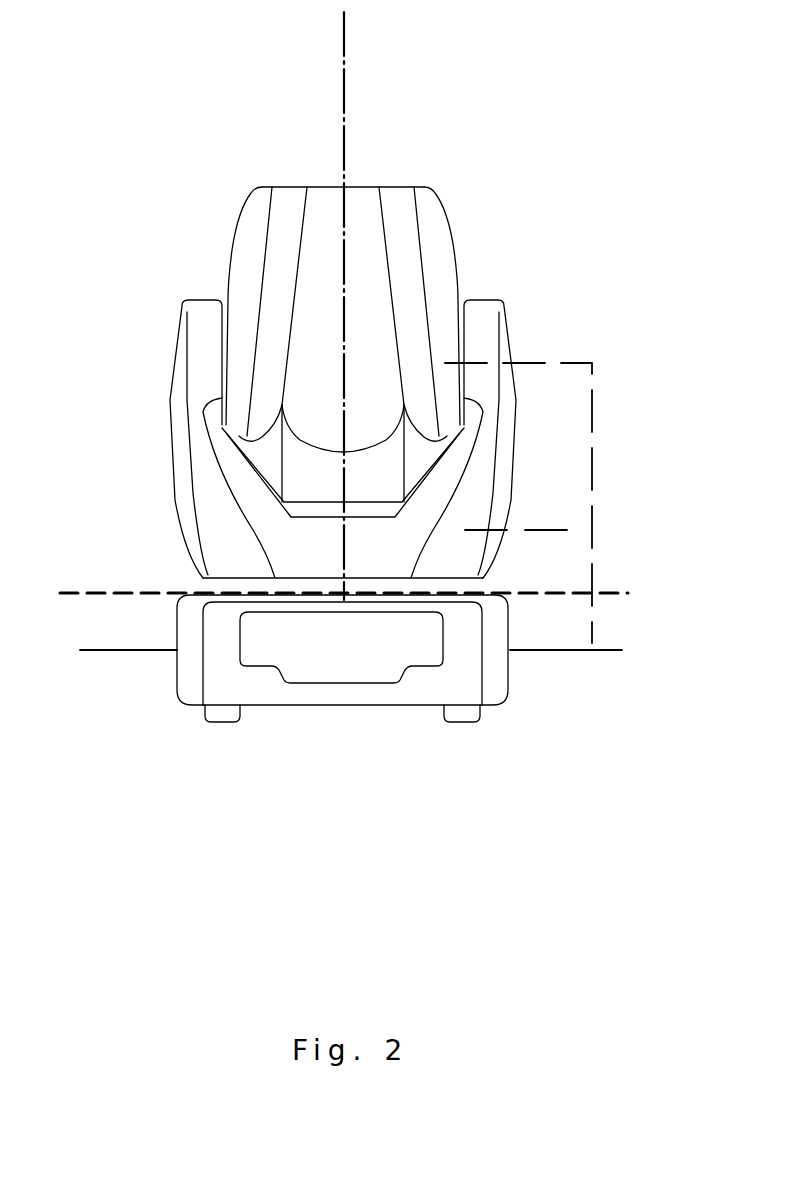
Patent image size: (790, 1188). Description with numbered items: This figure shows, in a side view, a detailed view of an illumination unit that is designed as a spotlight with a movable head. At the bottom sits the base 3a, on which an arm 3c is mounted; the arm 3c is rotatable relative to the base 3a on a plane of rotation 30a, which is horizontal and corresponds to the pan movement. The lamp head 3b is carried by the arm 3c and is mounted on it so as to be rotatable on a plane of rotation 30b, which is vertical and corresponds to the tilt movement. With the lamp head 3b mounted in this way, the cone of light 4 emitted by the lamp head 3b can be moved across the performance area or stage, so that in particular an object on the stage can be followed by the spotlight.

The base 3a is at (330, 652).
The lamp head 3b is at (335, 262).
The arm 3c is at (203, 343).
The cone of light 4 is at (222, 523).
The plane of rotation 30a is at (604, 594).
The plane of rotation 30b is at (345, 90).